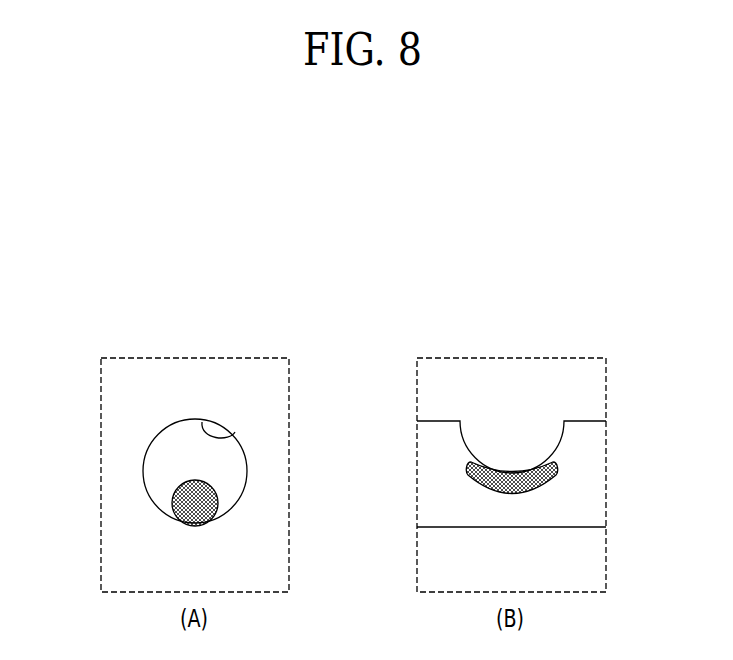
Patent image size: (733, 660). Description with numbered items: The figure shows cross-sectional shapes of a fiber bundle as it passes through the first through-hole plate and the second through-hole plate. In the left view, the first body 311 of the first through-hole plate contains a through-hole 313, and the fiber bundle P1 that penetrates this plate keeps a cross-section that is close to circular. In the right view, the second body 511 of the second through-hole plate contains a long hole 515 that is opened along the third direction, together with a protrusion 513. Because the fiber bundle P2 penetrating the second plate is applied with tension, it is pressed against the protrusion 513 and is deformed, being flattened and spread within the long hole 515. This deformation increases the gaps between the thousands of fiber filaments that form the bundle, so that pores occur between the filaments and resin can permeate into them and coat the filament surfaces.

The first body 311 is at (144, 375).
The through-hole 313 is at (232, 433).
The fiber bundle P1 is at (187, 508).
The second body 511 is at (547, 380).
The protrusion 513 is at (463, 444).
The long hole 515 is at (575, 527).
The fiber bundle P2 is at (486, 480).